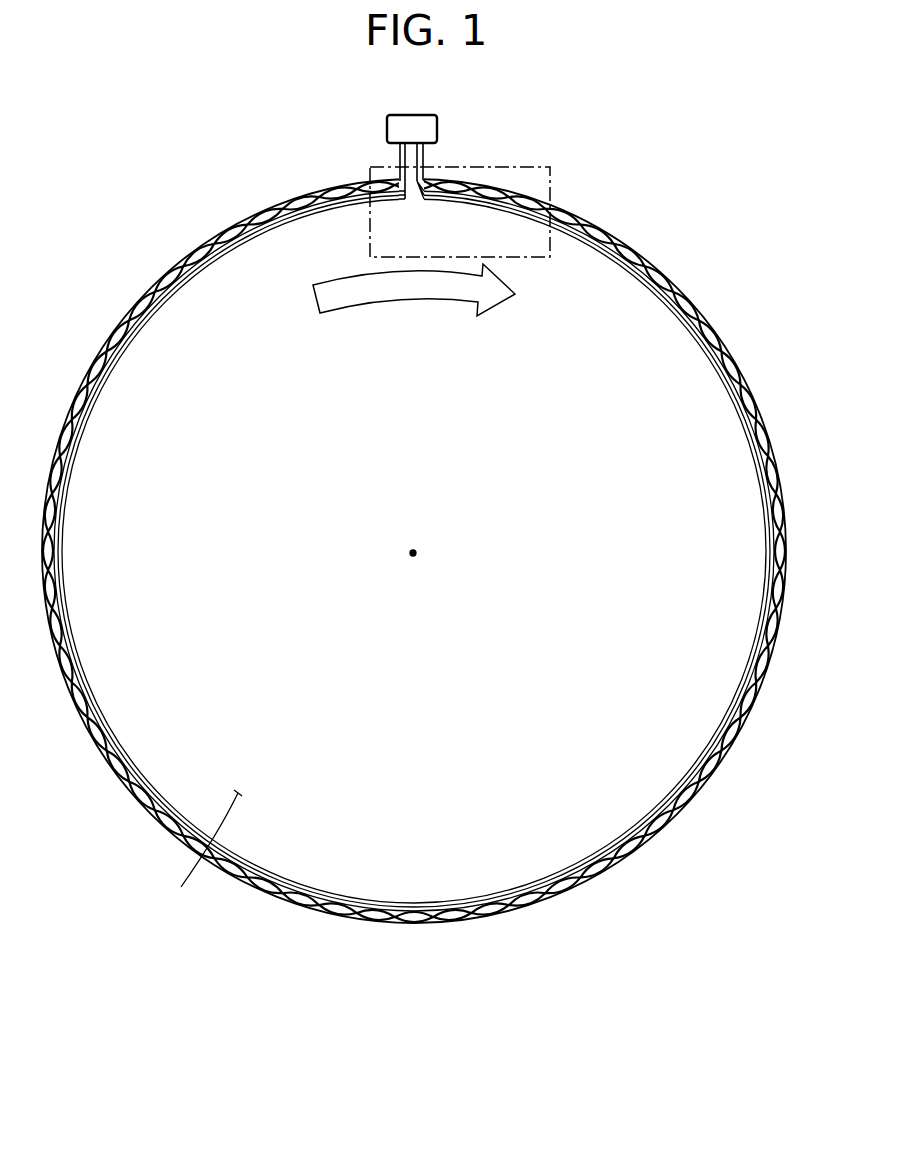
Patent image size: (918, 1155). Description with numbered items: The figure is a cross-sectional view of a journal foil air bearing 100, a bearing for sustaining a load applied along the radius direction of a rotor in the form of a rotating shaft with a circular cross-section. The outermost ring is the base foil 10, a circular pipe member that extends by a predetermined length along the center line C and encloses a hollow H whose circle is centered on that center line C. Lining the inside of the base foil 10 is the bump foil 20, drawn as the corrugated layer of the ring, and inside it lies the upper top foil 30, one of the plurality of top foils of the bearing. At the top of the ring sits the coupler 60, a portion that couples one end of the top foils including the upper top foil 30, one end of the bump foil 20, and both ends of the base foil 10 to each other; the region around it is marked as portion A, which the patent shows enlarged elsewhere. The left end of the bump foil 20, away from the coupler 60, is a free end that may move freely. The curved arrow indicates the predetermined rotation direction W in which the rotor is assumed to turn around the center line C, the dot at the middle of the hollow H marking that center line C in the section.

The journal foil air bearing 100 is at (416, 544).
The base foil 10 is at (665, 283).
The bump foil 20 is at (690, 325).
The upper top foil 30 is at (697, 350).
The coupler 60 is at (377, 153).
The portion A is at (551, 167).
The rotation direction W is at (406, 297).
The center line C is at (412, 556).
The hollow H is at (200, 854).